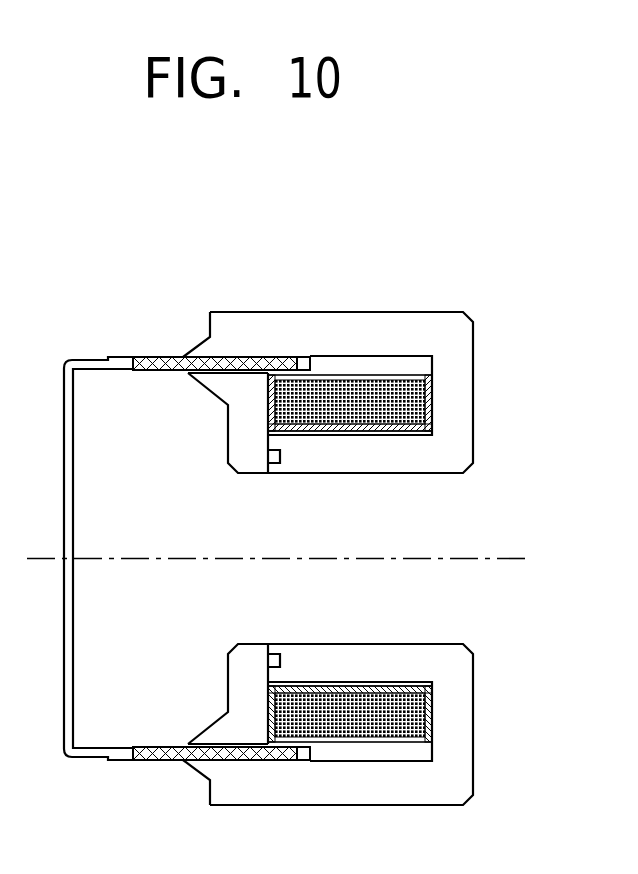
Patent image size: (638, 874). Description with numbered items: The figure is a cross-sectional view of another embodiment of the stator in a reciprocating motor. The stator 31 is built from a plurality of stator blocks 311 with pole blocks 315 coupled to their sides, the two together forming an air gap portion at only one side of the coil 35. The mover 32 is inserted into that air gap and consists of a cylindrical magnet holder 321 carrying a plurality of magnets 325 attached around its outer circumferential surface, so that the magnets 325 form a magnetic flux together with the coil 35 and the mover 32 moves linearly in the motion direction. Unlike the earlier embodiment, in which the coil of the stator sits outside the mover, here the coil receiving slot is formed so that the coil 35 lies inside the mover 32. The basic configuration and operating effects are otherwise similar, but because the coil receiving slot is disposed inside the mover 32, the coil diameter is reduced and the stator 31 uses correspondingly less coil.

The stator 31 is at (328, 491).
The stator block 311 is at (304, 322).
The pole block 315 is at (242, 387).
The mover 32 is at (185, 486).
The magnet holder 321 is at (100, 360).
The magnet 325 is at (218, 506).
The coil 35 is at (385, 380).